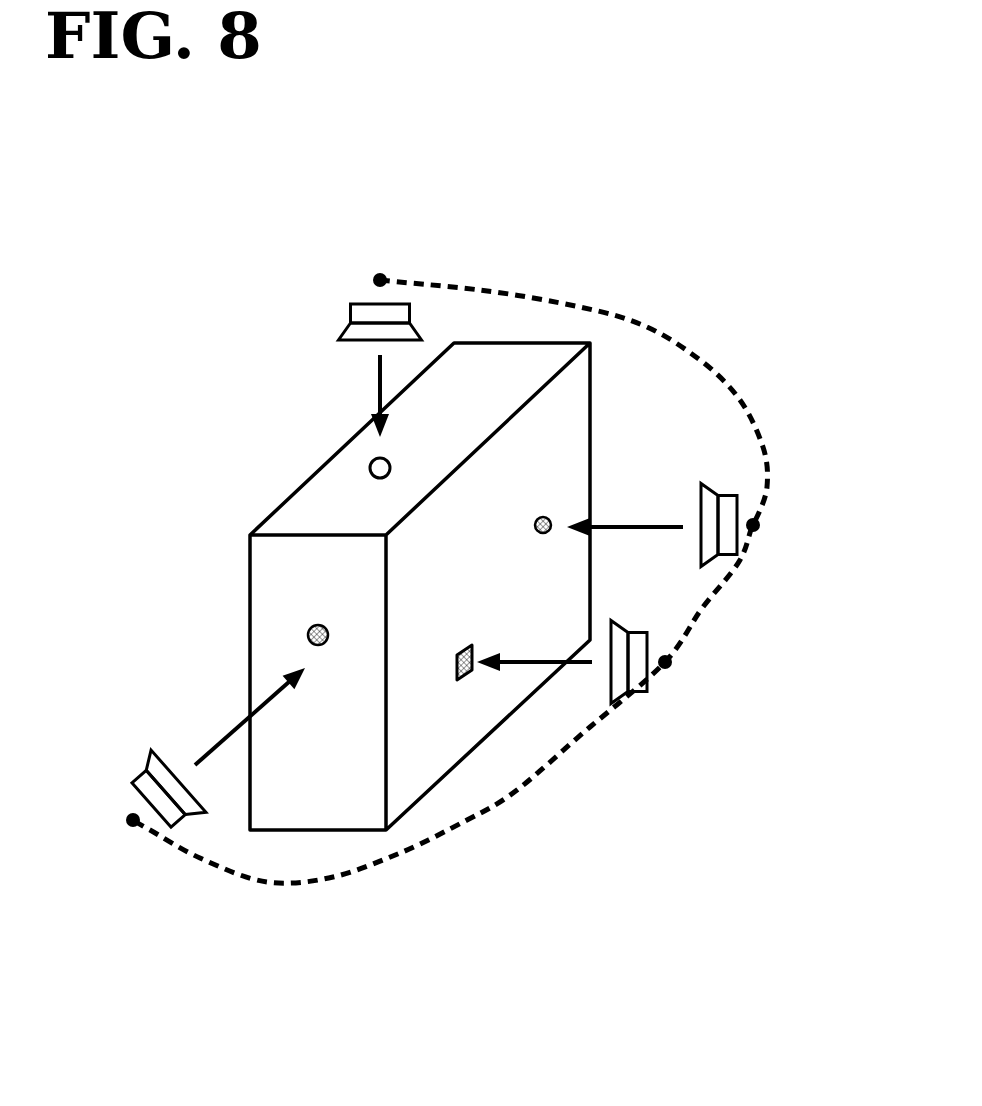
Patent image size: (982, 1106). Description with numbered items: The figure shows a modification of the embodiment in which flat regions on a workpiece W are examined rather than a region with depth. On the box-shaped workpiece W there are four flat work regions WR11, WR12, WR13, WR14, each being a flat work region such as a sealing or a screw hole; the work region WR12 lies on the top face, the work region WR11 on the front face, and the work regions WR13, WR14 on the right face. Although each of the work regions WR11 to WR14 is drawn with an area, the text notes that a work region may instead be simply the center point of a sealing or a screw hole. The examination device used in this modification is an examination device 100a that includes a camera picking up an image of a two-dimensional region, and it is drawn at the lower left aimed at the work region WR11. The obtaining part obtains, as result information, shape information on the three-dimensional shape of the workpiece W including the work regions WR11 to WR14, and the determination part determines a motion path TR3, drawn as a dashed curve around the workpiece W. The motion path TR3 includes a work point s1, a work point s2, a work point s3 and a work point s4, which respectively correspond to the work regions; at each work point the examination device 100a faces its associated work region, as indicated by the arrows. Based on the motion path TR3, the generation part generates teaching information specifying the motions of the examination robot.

The workpiece W is at (621, 460).
The motion path TR3 is at (542, 803).
The work point s1 is at (133, 828).
The work point s2 is at (665, 670).
The work point s3 is at (760, 530).
The work point s4 is at (372, 280).
The examination device 100a is at (145, 768).
The work region WR11 is at (311, 628).
The work region WR12 is at (380, 458).
The work region WR13 is at (543, 517).
The work region WR14 is at (466, 648).